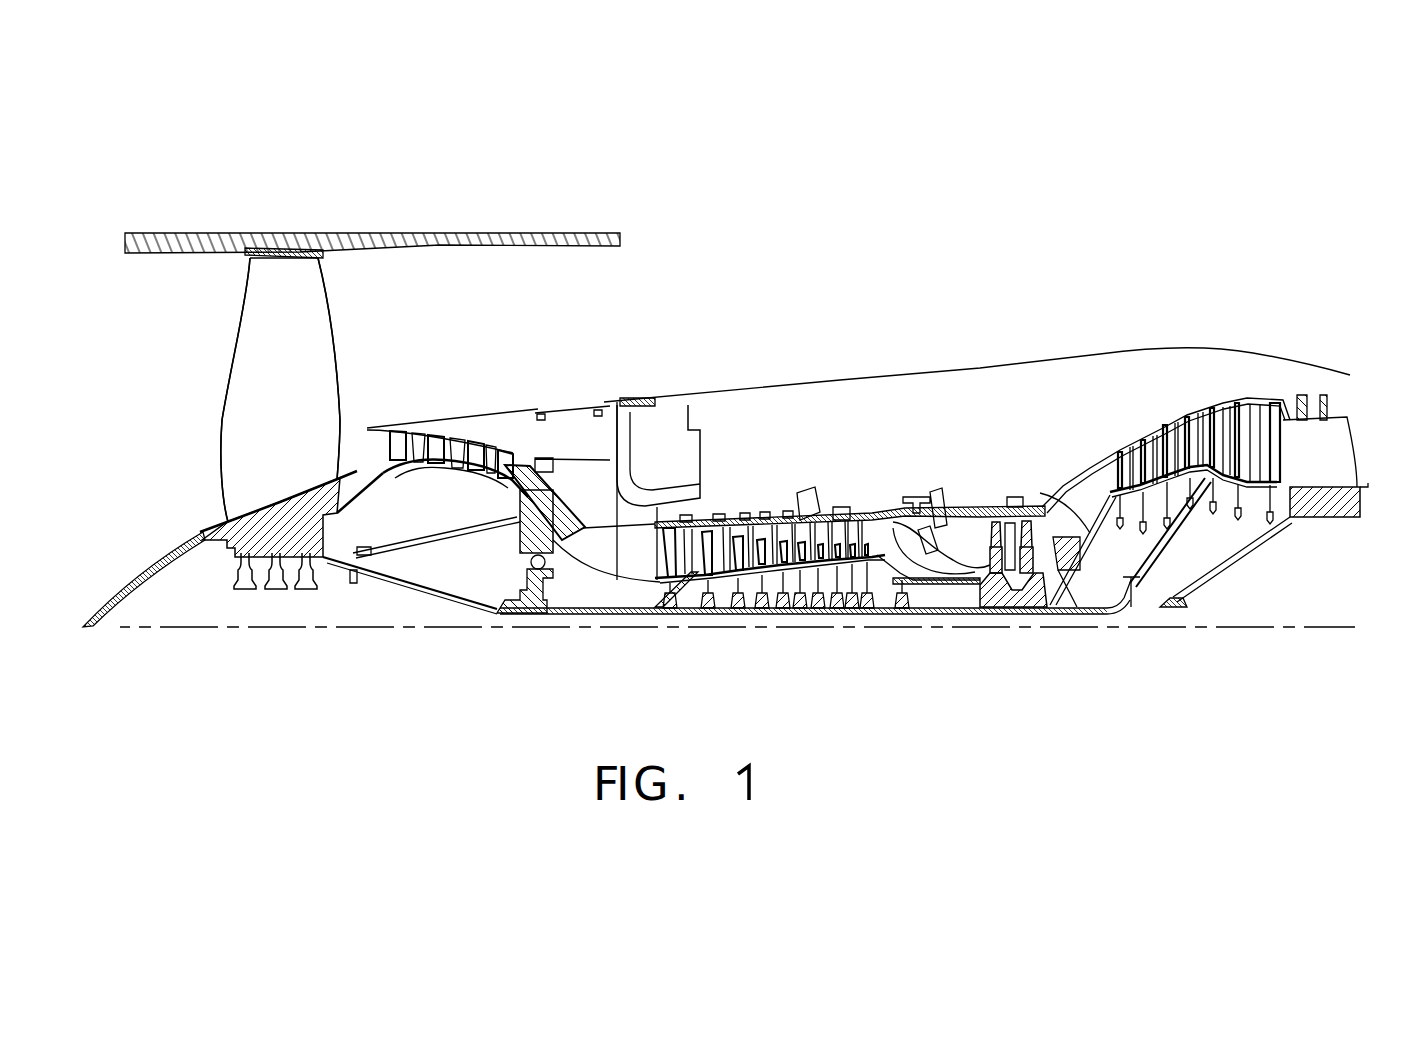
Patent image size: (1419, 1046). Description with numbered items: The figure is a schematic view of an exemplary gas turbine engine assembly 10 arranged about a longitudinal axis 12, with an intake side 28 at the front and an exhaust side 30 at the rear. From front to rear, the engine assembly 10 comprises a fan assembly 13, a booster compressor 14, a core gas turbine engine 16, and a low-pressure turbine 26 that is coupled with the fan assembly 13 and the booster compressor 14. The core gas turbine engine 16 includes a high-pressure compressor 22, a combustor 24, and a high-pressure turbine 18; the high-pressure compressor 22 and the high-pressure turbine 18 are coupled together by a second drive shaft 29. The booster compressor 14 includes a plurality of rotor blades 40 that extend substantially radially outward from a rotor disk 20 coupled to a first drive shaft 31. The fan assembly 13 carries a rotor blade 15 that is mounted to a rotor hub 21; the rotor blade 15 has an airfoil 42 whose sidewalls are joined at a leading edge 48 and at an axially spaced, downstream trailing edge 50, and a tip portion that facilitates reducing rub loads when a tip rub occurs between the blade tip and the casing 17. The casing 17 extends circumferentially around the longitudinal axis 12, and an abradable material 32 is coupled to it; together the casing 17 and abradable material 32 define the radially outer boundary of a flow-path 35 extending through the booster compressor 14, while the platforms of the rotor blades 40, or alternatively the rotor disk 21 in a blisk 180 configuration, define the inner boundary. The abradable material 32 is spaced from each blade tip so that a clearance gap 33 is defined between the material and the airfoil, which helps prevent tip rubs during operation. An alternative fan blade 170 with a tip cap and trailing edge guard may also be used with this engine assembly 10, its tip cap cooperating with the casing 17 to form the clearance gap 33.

The engine assembly 10 is at (963, 180).
The longitudinal axis 12 is at (123, 628).
The fan assembly 13 is at (225, 358).
The booster compressor 14 is at (422, 430).
The rotor blade 15 is at (293, 320).
The core gas turbine engine 16 is at (920, 432).
The casing 17 is at (417, 243).
The high-pressure turbine 18 is at (997, 600).
The rotor disk 20 is at (400, 470).
The rotor hub 21 is at (290, 502).
The high-pressure compressor 22 is at (673, 533).
The combustor 24 is at (953, 530).
The low-pressure turbine 26 is at (1253, 400).
The intake side 28 is at (123, 294).
The second drive shaft 29 is at (932, 583).
The exhaust side 30 is at (1374, 430).
The first drive shaft 31 is at (523, 617).
The abradable material 32 is at (293, 232).
The clearance gap 33 is at (247, 255).
The flow-path 35 is at (600, 538).
The rotor blades 40 is at (400, 430).
The airfoil 42 is at (241, 420).
The leading edge 48 is at (223, 402).
The trailing edge 50 is at (337, 350).
The fan blade 170 is at (252, 448).
The blisk 180 is at (205, 553).